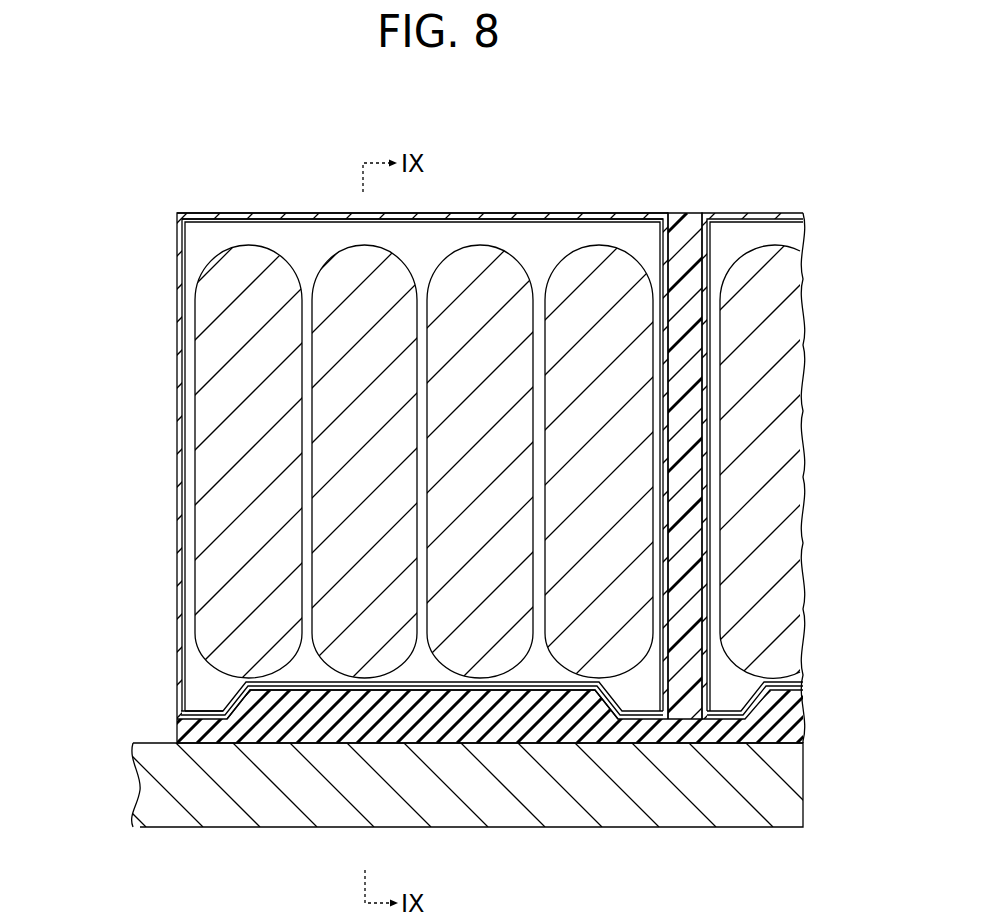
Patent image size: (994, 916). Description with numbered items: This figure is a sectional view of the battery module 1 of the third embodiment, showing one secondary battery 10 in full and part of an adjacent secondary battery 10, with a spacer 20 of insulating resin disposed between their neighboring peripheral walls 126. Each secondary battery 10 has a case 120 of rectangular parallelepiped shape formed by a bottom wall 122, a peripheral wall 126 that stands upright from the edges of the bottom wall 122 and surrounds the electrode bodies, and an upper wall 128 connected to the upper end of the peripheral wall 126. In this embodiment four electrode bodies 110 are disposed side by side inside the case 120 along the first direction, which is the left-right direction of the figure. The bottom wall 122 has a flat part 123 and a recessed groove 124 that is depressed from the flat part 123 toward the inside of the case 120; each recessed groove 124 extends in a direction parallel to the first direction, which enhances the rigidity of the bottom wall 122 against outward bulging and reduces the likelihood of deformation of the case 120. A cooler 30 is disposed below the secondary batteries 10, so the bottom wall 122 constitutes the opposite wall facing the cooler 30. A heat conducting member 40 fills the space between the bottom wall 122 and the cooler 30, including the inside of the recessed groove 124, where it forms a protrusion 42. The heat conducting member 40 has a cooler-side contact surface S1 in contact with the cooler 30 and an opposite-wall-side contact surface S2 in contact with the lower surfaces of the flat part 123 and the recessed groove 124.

The battery module 1 is at (163, 177).
The secondary battery 10 is at (197, 212).
The spacer 20 is at (687, 230).
The cooler 30 is at (198, 795).
The heat conducting member 40 is at (202, 732).
The protrusion 42 is at (275, 703).
The electrode body 110 is at (248, 245).
The case 120 is at (176, 213).
The bottom wall 122 is at (108, 620).
The flat part 123 is at (212, 710).
The recessed groove 124 is at (297, 687).
The peripheral wall 126 is at (183, 473).
The upper wall 128 is at (294, 219).
The cooler-side contact surface S1 is at (207, 747).
The opposite-wall-side contact surface S2 is at (202, 700).